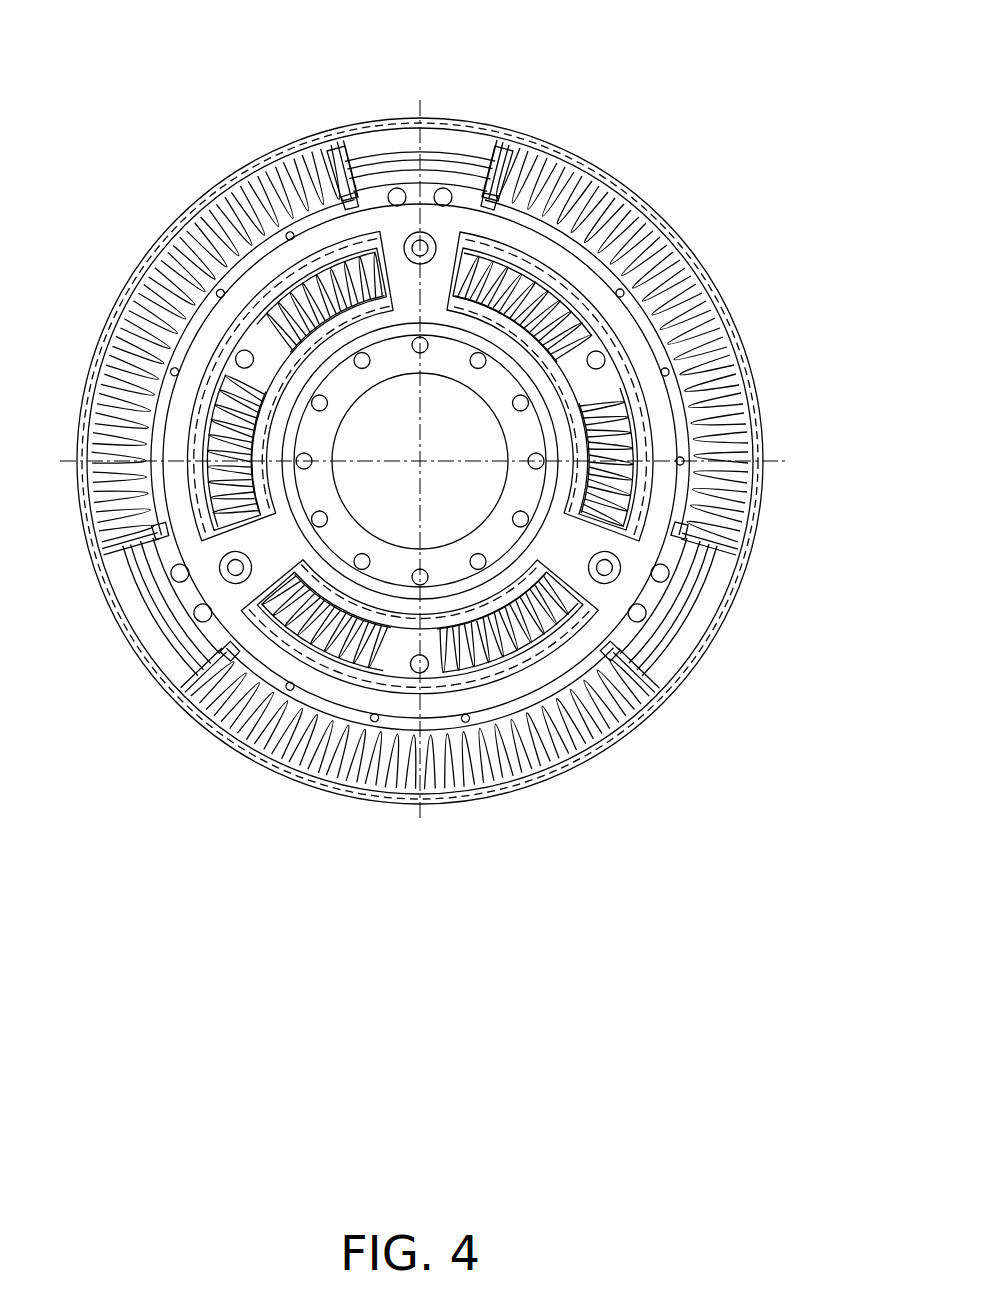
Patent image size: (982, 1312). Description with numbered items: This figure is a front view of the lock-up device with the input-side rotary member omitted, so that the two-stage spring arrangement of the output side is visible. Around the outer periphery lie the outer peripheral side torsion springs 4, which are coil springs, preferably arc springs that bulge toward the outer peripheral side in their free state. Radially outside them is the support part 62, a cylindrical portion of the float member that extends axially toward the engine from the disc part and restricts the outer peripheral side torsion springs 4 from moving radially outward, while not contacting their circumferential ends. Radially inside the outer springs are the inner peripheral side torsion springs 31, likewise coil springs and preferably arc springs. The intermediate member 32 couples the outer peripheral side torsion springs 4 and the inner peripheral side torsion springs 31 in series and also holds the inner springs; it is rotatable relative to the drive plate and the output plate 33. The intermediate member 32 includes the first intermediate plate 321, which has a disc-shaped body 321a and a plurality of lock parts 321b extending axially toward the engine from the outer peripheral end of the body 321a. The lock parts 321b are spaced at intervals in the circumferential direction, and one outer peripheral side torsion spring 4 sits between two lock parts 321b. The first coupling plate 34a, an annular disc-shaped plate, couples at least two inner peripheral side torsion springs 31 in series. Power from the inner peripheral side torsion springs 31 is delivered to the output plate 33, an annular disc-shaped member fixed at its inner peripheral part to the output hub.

The intermediate member 32 is at (423, 143).
The first intermediate plate 321 is at (455, 148).
The body 321a is at (548, 248).
The lock parts 321b is at (483, 158).
The support part 62 is at (314, 141).
The outer peripheral side torsion springs 4 is at (223, 205).
The first coupling plate 34a is at (583, 350).
The inner peripheral side torsion springs 31 is at (626, 432).
The output plate 33 is at (385, 556).